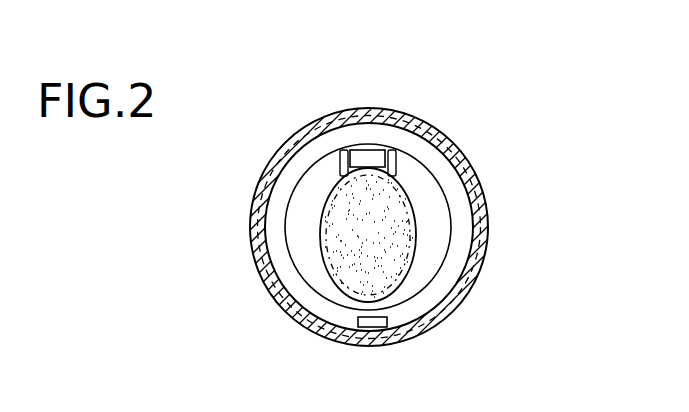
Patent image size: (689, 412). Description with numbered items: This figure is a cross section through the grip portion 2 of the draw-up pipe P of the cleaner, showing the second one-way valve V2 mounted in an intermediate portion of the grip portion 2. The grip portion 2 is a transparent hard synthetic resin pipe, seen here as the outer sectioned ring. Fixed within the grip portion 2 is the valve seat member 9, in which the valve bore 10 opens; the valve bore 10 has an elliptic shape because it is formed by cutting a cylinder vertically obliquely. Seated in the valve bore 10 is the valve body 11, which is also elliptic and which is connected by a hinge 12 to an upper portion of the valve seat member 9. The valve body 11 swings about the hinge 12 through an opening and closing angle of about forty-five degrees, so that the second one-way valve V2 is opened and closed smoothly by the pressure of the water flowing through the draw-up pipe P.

The draw-up pipe P is at (415, 108).
The grip portion 2 is at (475, 244).
The valve seat member 9 is at (316, 138).
The valve bore 10 is at (343, 290).
The valve body 11 is at (393, 260).
The hinge 12 is at (370, 157).
The second one-way valve V2 is at (425, 197).